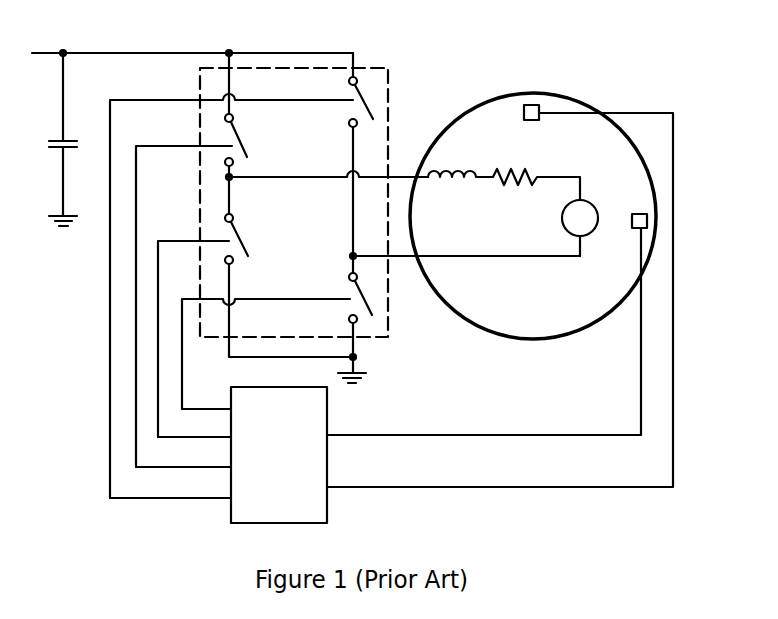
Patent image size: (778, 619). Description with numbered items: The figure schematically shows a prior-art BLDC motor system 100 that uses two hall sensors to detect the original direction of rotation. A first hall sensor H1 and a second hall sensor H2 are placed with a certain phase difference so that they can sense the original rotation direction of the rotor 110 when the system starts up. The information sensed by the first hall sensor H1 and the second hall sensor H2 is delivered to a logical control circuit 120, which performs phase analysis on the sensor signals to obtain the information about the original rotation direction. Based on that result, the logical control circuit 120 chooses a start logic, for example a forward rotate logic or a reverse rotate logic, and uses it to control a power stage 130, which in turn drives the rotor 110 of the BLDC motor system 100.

The BLDC motor system 100 is at (623, 65).
The rotor 110 is at (533, 205).
The logical control circuit 120 is at (279, 455).
The power stage 130 is at (388, 89).
The first hall sensor H1 is at (626, 233).
The second hall sensor H2 is at (514, 119).